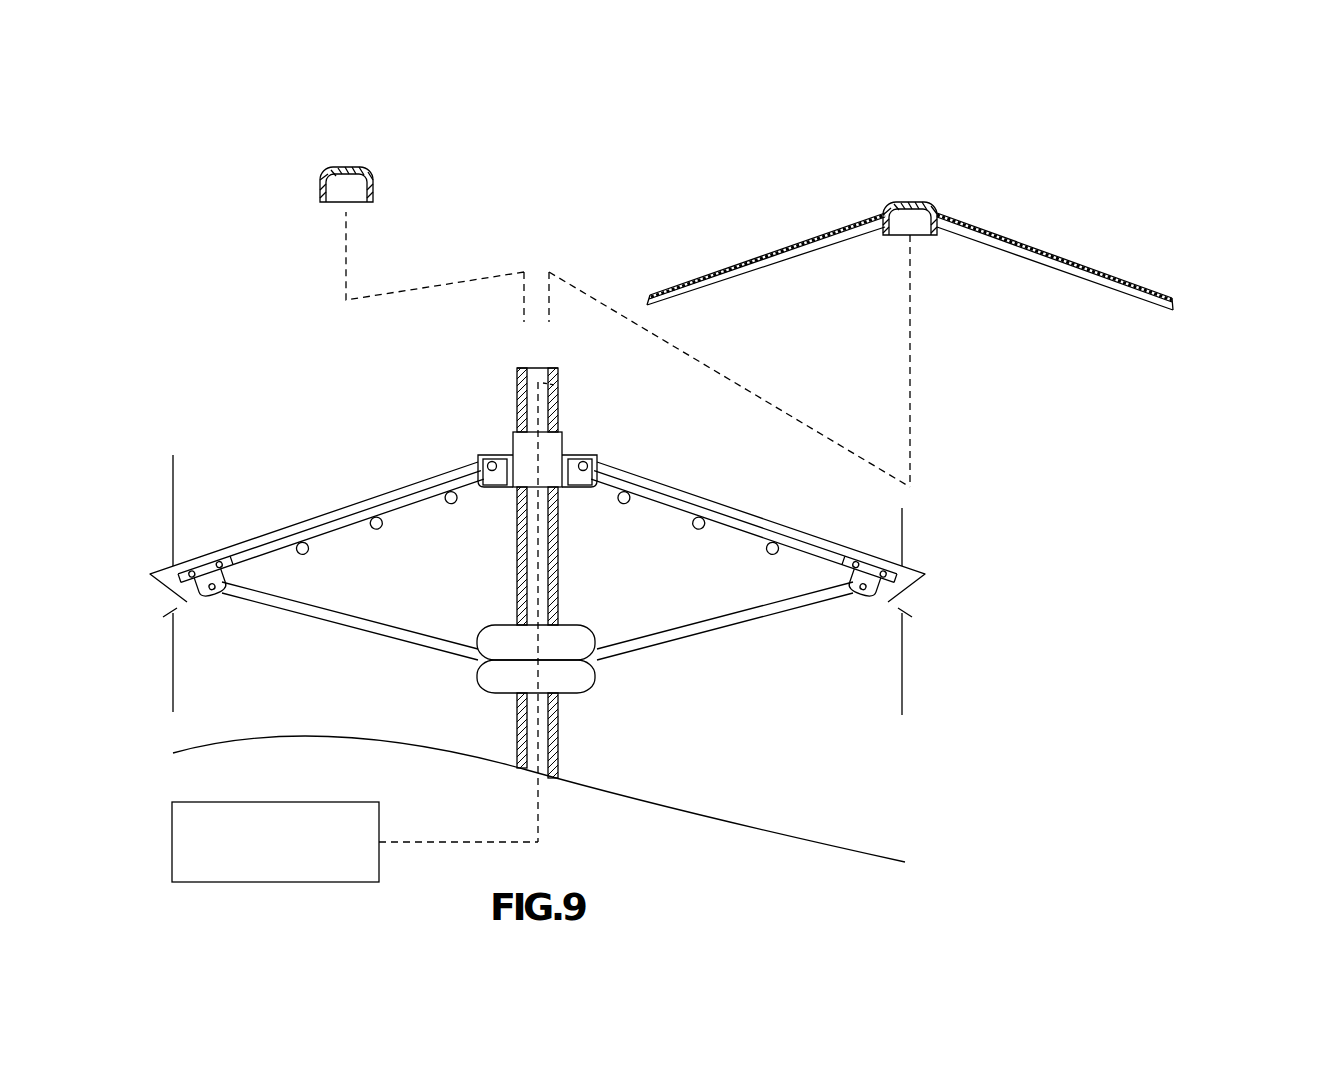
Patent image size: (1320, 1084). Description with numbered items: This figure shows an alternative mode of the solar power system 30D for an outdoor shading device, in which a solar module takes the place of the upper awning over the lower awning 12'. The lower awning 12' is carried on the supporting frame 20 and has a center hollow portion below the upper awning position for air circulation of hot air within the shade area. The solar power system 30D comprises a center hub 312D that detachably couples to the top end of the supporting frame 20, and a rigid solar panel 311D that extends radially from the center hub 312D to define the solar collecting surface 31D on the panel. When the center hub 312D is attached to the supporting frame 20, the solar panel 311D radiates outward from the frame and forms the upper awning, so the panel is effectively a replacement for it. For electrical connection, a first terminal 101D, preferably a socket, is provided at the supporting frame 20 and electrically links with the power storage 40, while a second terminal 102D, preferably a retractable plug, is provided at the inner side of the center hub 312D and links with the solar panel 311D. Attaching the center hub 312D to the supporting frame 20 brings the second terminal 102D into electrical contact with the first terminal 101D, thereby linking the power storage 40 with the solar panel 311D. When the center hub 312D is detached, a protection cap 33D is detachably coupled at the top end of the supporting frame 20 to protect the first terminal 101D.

The supporting frame 20 is at (560, 560).
The first terminal 101D is at (555, 385).
The lower awning 12' is at (572, 573).
The protection cap 33D is at (327, 190).
The solar power system 30D is at (956, 192).
The solar collecting surface 31D is at (713, 252).
The solar panel 311D is at (1010, 240).
The center hub 312D is at (917, 204).
The second terminal 102D is at (921, 238).
The power storage 40 is at (355, 842).